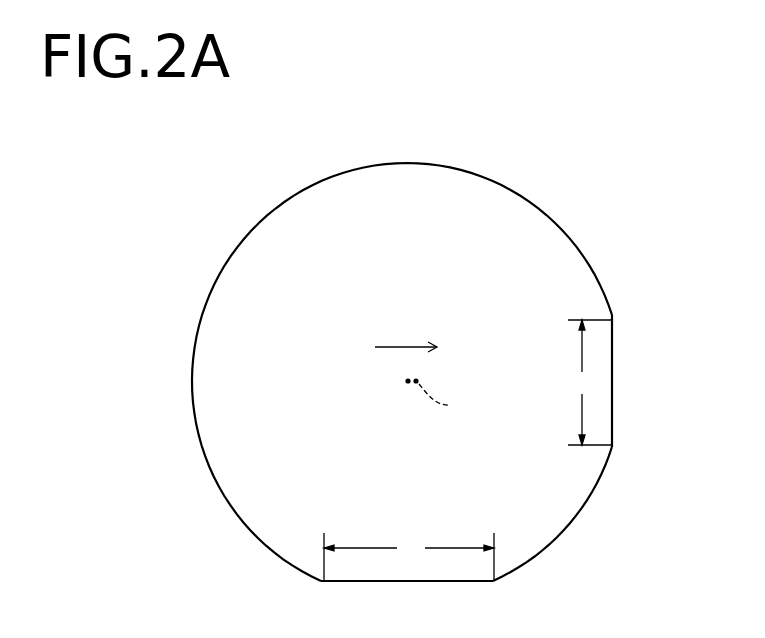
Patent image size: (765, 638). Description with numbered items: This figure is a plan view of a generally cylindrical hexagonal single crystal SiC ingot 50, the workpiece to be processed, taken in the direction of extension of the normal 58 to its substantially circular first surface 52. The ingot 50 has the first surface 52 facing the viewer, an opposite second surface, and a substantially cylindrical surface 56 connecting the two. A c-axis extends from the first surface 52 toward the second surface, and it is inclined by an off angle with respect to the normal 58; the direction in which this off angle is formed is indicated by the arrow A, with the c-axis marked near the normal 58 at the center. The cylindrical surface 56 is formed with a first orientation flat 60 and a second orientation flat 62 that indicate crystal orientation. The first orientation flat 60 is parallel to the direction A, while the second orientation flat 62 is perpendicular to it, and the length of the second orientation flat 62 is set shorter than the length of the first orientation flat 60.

The single crystal SiC ingot 50 is at (427, 390).
The first surface 52 is at (477, 205).
The cylindrical surface 56 is at (571, 232).
The normal 58 is at (405, 383).
The first orientation flat 60 is at (445, 582).
The second orientation flat 62 is at (612, 379).